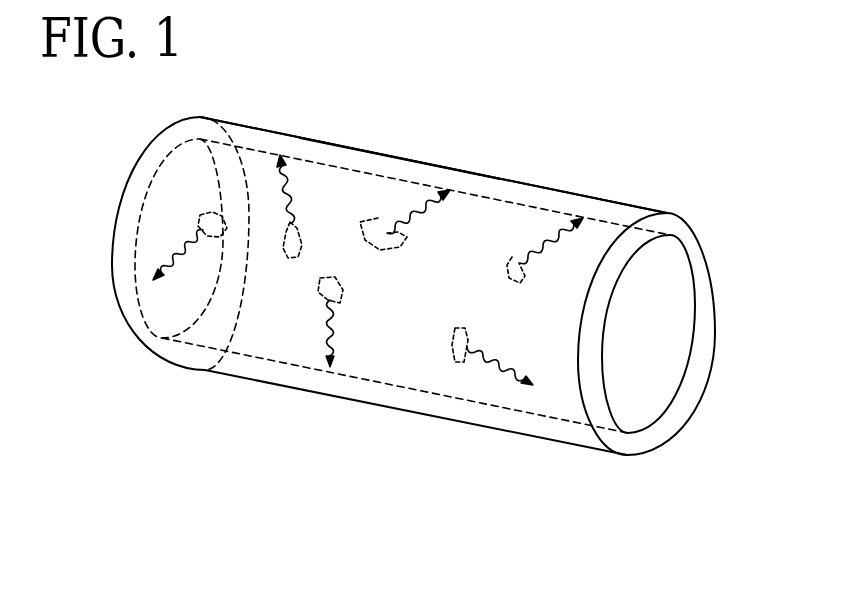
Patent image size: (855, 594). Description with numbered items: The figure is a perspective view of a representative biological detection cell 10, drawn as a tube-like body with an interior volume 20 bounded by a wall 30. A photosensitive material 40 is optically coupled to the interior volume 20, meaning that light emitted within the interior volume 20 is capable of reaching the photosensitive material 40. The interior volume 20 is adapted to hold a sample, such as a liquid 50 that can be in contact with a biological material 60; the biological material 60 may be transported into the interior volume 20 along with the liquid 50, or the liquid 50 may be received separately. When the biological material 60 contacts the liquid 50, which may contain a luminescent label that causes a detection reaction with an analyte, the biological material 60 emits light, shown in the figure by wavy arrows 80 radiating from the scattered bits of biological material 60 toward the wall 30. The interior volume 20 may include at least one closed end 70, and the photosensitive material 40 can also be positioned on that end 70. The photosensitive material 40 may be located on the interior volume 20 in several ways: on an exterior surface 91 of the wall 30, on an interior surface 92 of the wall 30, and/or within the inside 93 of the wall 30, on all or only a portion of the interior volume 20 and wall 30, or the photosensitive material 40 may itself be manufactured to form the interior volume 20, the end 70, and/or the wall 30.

The detection cell 10 is at (414, 274).
The interior volume 20 is at (256, 238).
The wall 30 is at (707, 302).
The photosensitive material 40 is at (138, 231).
The liquid 50 is at (385, 352).
The biological material 60 is at (317, 288).
The closed end 70 is at (652, 373).
The arrows 80 is at (488, 365).
The exterior surface 91 is at (302, 137).
The interior surface 92 is at (363, 172).
The inside 93 is at (433, 173).